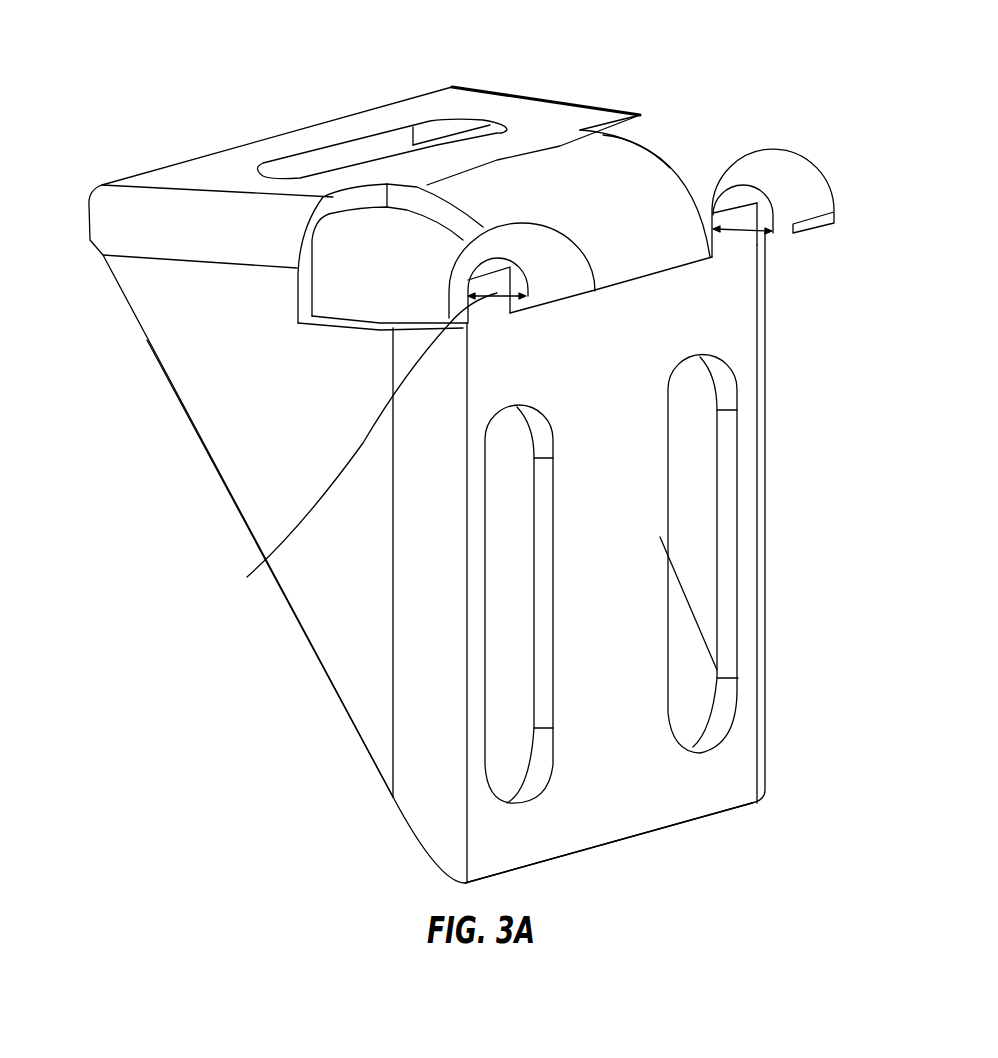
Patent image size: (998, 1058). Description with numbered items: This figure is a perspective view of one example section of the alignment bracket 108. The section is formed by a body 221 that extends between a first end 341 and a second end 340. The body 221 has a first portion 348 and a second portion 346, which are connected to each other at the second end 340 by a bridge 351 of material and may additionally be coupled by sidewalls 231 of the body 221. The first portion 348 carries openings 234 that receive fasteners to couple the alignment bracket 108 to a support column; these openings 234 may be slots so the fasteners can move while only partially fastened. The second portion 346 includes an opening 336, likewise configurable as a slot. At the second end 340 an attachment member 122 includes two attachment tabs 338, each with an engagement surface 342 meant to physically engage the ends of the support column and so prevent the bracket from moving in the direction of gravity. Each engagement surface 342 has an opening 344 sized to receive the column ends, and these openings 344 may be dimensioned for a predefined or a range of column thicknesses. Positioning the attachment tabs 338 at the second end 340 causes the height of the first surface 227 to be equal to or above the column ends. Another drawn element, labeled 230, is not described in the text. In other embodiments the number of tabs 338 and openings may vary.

The alignment bracket 108 is at (93, 90).
The attachment member 122 is at (897, 152).
The body 221 is at (338, 660).
The first surface 227 is at (460, 106).
The front wall 230 is at (747, 760).
The sidewalls 231 is at (220, 438).
The openings 234 is at (693, 408).
The opening 336 is at (343, 157).
The attachment tabs 338 is at (560, 245).
The second end 340 is at (652, 253).
The first end 341 is at (647, 833).
The engagement surfaces 342 is at (493, 263).
The openings 344 is at (740, 237).
The second portion 346 is at (188, 180).
The first portion 348 is at (747, 623).
The bridge 351 is at (637, 172).